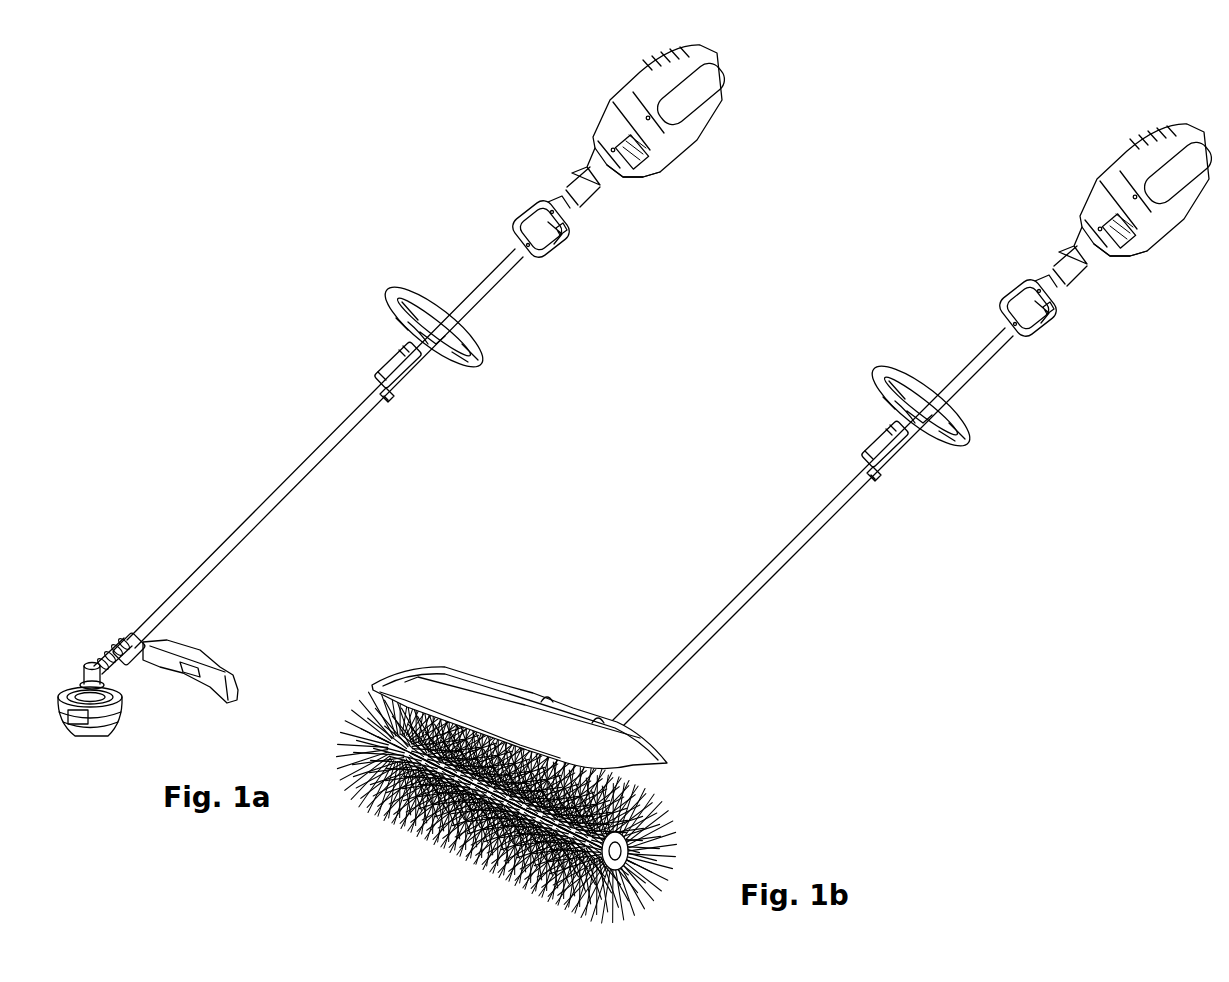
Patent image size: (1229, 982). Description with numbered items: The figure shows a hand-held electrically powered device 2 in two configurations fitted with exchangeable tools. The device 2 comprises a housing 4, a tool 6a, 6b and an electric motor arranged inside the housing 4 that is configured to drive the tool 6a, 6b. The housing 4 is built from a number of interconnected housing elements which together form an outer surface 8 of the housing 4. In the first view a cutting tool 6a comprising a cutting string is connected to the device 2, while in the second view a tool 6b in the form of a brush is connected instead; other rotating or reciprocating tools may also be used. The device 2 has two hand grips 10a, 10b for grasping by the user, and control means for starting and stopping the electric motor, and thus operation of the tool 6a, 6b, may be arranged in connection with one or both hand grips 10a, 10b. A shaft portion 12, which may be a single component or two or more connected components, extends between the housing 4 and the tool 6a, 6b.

In FIG. 1A, the hand-held electrically powered device 2 is at (402, 174).
In FIG. 1B, the hand-held electrically powered device 2 is at (880, 300).
In FIG. 1A, the housing 4 is at (614, 113).
In FIG. 1B, the housing 4 is at (1100, 192).
In FIG. 1A, the cutting tool 6a is at (107, 727).
In FIG. 1B, the tool in the form of a brush 6b is at (473, 857).
In FIG. 1A, the outer surface 8 is at (656, 163).
In FIG. 1B, the outer surface 8 is at (1142, 244).
In FIG. 1A, the hand grip 10a is at (582, 192).
In FIG. 1B, the hand grip 10a is at (1070, 270).
In FIG. 1A, the hand grip 10b is at (408, 300).
In FIG. 1B, the hand grip 10b is at (902, 378).
In FIG. 1A, the shaft portion 12 is at (375, 398).
In FIG. 1B, the shaft portion 12 is at (843, 497).